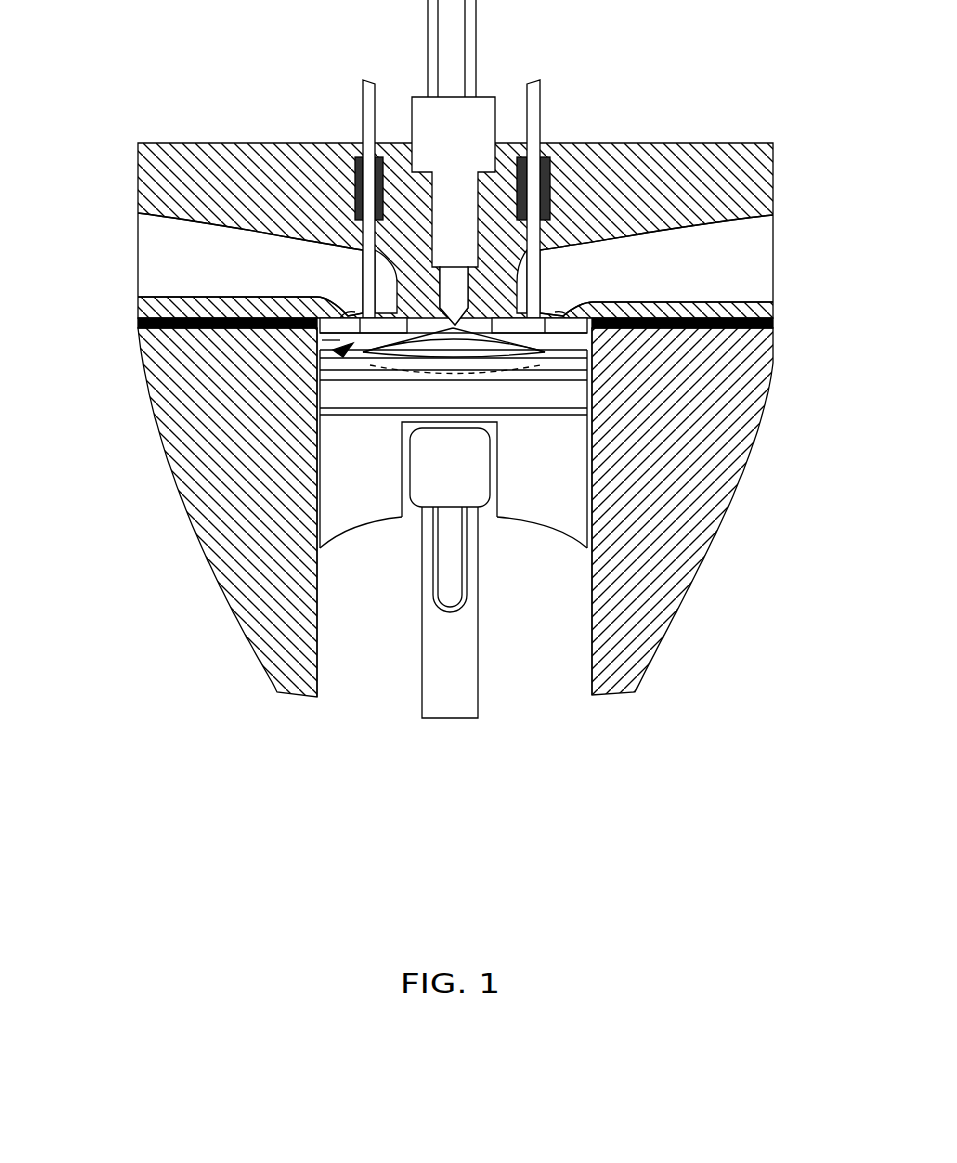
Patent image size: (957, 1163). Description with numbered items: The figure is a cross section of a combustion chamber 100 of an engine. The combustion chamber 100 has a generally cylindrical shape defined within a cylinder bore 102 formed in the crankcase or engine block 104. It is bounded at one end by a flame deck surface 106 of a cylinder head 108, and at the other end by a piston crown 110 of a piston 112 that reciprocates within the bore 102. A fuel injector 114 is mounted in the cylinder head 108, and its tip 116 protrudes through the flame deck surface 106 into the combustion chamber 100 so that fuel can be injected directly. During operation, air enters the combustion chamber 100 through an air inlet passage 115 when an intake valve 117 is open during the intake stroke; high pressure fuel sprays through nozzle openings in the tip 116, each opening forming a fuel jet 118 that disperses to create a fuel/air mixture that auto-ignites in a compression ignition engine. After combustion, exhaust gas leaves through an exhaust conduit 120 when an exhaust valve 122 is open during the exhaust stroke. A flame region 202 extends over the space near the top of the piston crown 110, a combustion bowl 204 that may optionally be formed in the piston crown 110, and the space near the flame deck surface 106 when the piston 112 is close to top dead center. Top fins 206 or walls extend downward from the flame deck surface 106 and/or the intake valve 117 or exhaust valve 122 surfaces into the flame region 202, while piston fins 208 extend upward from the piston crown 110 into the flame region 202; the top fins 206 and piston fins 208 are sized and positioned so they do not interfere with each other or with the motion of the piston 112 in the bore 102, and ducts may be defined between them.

The combustion chamber 100 is at (365, 338).
The cylinder bore 102 is at (577, 639).
The engine block 104 is at (707, 490).
The flame deck surface 106 is at (560, 329).
The cylinder head 108 is at (750, 187).
The piston crown 110 is at (330, 378).
The piston 112 is at (453, 534).
The fuel injector 114 is at (480, 110).
The air inlet passage 115 is at (163, 252).
The tip 116 is at (457, 323).
The intake valve 117 is at (343, 315).
The fuel jet 118 is at (555, 348).
The exhaust conduit 120 is at (737, 252).
The exhaust valve 122 is at (545, 337).
The flame region 202 is at (325, 403).
The combustion bowl 204 is at (392, 347).
The top fins 206 is at (335, 330).
The piston fins 208 is at (345, 349).